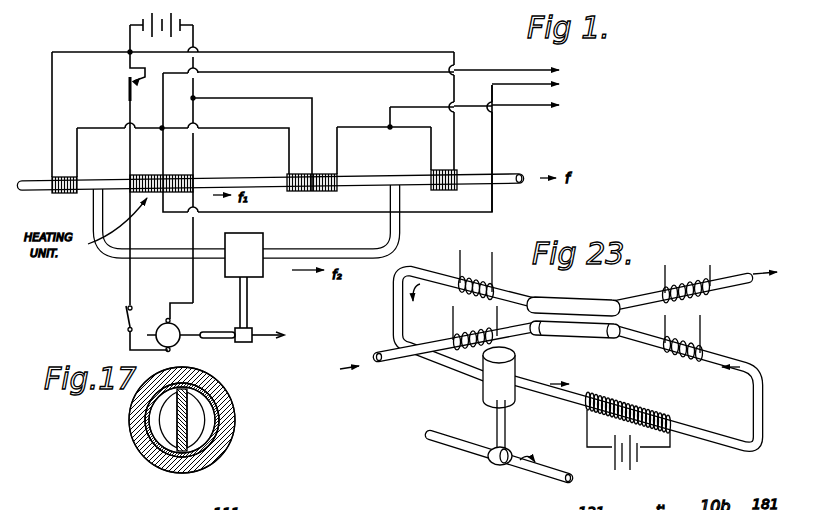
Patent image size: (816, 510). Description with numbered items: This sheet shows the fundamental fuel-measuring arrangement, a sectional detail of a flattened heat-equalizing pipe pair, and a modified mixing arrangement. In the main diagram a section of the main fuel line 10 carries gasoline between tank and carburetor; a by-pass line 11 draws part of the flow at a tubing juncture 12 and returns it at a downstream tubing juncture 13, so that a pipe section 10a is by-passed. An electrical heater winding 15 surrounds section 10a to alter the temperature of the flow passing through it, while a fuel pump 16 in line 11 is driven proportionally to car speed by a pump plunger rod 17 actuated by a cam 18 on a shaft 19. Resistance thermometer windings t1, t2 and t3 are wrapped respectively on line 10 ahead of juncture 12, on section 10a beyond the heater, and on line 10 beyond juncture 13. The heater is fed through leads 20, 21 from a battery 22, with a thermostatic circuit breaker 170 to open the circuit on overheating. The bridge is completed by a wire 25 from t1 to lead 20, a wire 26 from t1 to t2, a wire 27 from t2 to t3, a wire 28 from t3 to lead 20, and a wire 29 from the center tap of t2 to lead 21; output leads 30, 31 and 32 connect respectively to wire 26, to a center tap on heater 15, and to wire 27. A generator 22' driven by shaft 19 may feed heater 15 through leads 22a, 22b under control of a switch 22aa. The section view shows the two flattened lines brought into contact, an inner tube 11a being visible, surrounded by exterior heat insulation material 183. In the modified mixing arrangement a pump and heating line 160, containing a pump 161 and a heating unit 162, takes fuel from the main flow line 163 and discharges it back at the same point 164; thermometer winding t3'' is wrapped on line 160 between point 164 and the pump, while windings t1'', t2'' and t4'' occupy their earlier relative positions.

In FIG. 1, the main fuel line 10 is at (34, 177).
In FIG. 1, the pipe section 10a is at (231, 178).
In FIG. 17, the pipe section 10a is at (233, 412).
In FIG. 1, the by-pass line 11 is at (302, 253).
In FIG. 17, the inner tube 11a is at (140, 440).
In FIG. 1, the tubing juncture 12 is at (96, 191).
In FIG. 1, the tubing juncture 13 is at (398, 174).
In FIG. 1, the electrical heater winding 15 is at (150, 174).
In FIG. 1, the fuel pump 16 is at (244, 255).
In FIG. 1, the pump plunger rod 17 is at (249, 299).
In FIG. 1, the cam 18 is at (253, 331).
In FIG. 1, the shaft 19 is at (283, 338).
In FIG. 1, the lead 20 is at (128, 112).
In FIG. 1, the lead 21 is at (198, 113).
In FIG. 1, the battery 22 is at (179, 25).
In FIG. 1, the generator 22' is at (191, 319).
In FIG. 1, the lead 22a is at (126, 305).
In FIG. 1, the switch 22aa is at (126, 318).
In FIG. 1, the lead 22b is at (196, 297).
In FIG. 1, the wire 25 is at (52, 97).
In FIG. 1, the wire 26 is at (105, 130).
In FIG. 1, the wire 27 is at (377, 128).
In FIG. 1, the wire 28 is at (455, 139).
In FIG. 1, the wire 29 is at (313, 118).
In FIG. 1, the lead 30 is at (478, 69).
In FIG. 1, the lead 31 is at (520, 87).
In FIG. 1, the lead 32 is at (538, 110).
In FIG. 1, the thermostatic circuit breaker 170 is at (128, 90).
In FIG. 17, the exterior heat insulation material 183 is at (165, 470).
In FIG. 23, the pump and heating line 160 is at (553, 393).
In FIG. 23, the pump 161 is at (490, 392).
In FIG. 23, the heating unit 162 is at (620, 408).
In FIG. 23, the main flow line 163 is at (397, 365).
In FIG. 23, the point 164 is at (574, 313).
In FIG. 1, the resistance thermometer winding t1 is at (64, 177).
In FIG. 1, the resistance thermometer winding t2 is at (312, 191).
In FIG. 1, the resistance thermometer winding t3 is at (444, 173).
In FIG. 23, the thermometer winding t1'' is at (475, 328).
In FIG. 23, the thermometer winding t2'' is at (687, 282).
In FIG. 23, the thermometer winding t3'' is at (476, 275).
In FIG. 23, the thermometer winding t4'' is at (683, 338).